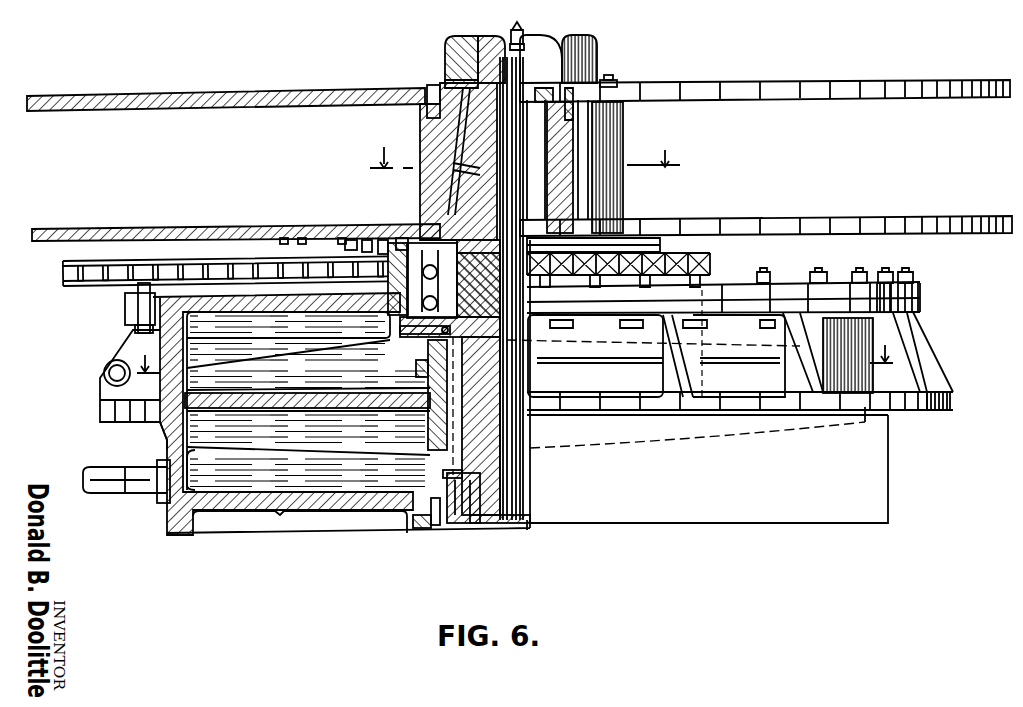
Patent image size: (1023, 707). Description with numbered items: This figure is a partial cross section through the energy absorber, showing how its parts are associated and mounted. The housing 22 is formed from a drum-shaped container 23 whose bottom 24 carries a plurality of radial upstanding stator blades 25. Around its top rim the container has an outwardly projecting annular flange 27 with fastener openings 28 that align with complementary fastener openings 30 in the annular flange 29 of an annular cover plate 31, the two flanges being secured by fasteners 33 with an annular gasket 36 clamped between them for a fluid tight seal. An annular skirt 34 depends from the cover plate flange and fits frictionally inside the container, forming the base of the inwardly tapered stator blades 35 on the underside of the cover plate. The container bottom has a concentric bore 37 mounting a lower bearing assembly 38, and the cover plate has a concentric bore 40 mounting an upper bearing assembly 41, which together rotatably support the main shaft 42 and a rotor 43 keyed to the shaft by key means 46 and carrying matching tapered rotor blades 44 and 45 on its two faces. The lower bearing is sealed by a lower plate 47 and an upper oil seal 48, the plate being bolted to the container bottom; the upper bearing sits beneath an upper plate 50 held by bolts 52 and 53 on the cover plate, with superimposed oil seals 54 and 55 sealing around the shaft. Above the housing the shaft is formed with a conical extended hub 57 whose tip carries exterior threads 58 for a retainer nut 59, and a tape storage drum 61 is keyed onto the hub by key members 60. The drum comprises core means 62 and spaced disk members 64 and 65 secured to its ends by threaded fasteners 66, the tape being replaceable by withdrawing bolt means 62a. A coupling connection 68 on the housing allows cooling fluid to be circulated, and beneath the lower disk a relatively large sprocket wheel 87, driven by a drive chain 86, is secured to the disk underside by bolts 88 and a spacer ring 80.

The housing 22 is at (150, 441).
The drum-shaped container 23 is at (100, 393).
The bottom 24 is at (280, 510).
The stator blades 25 is at (317, 478).
The annular flange 27 is at (130, 318).
The fastener openings 28 is at (186, 321).
The annular flange 29 is at (922, 292).
The fastener openings 30 is at (128, 301).
The annular cover plate 31 is at (247, 295).
The fasteners 33 is at (905, 272).
The annular skirt 34 is at (188, 347).
The stator blades 35 is at (310, 335).
The annular gasket 36 is at (780, 297).
The bore 37 is at (452, 523).
The lower bearing assembly 38 is at (482, 523).
The bore 40 is at (455, 292).
The upper bearing assembly 41 is at (355, 240).
The main shaft 42 is at (490, 420).
The rotor 43 is at (166, 441).
The rotor blades 44 is at (312, 385).
The rotor blades 45 is at (312, 435).
The key means 46 is at (430, 422).
The lower plate 47 is at (510, 523).
The upper oil seal 48 is at (442, 470).
The upper plate 50 is at (386, 240).
The bolts 52 is at (368, 240).
The bolts 53 is at (388, 340).
The upper oil seal 54 is at (404, 238).
The lower oil seal 55 is at (424, 342).
The conical extended hub 57 is at (452, 90).
The exterior threads 58 is at (470, 36).
The retainer nut 59 is at (448, 42).
The key members 60 is at (430, 113).
The tape storage drum 61 is at (622, 196).
The core means 62 is at (590, 120).
The bolt means 62a is at (560, 138).
The disk member 64 is at (207, 92).
The disk member 65 is at (128, 229).
The threaded fastener 66 is at (425, 190).
The coupling connection 68 is at (158, 503).
The spacer ring 80 is at (303, 240).
The drive chain 86 is at (63, 273).
The sprocket wheel 87 is at (285, 240).
The bolts 88 is at (344, 240).